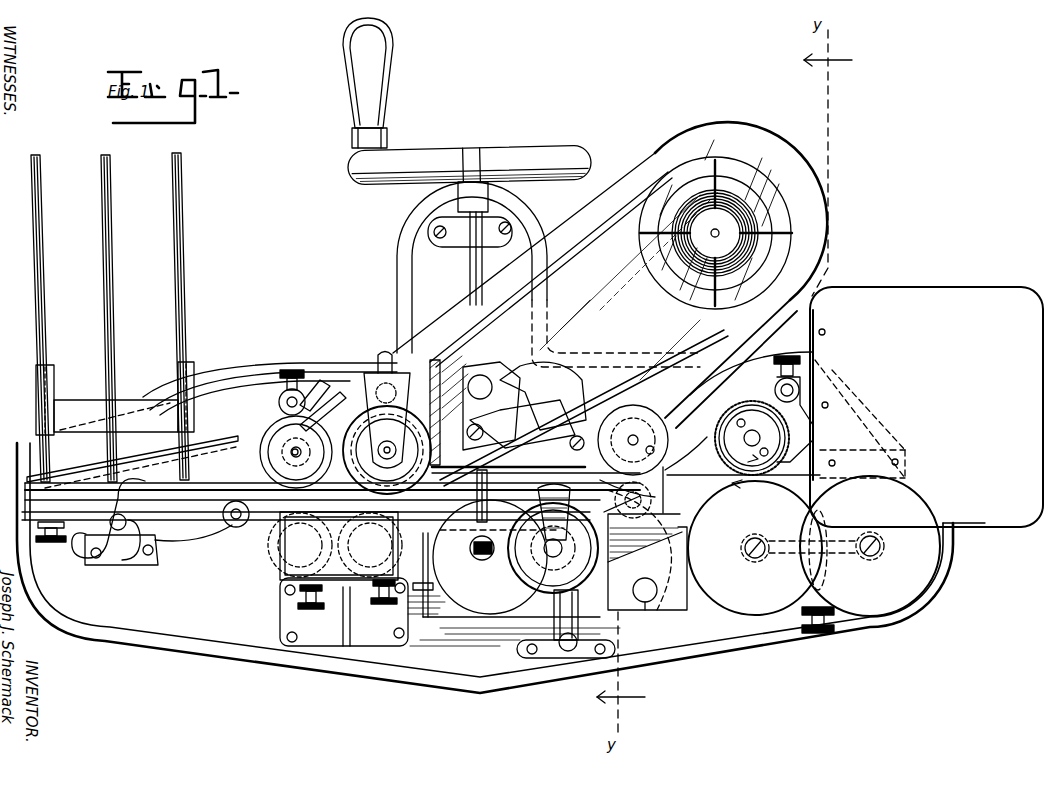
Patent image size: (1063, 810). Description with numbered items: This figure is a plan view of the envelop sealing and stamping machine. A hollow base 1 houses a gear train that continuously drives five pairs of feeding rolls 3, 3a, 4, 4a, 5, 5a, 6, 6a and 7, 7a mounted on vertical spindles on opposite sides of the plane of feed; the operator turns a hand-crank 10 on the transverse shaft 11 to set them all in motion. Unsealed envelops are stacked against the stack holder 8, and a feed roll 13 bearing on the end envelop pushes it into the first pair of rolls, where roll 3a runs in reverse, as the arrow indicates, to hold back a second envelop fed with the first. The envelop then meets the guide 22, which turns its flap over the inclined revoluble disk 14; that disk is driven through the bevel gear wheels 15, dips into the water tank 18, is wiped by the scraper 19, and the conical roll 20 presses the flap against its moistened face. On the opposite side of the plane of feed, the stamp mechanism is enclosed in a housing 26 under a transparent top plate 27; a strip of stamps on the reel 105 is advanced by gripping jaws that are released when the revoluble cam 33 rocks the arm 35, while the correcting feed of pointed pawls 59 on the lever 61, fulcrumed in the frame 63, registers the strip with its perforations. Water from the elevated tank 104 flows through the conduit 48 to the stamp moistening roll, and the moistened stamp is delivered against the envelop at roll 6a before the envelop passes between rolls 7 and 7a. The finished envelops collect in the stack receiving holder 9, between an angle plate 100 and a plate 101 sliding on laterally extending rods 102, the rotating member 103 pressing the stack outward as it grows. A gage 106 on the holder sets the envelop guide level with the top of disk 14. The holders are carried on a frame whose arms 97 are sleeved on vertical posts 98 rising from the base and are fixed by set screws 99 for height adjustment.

The base 1 is at (167, 650).
The feed roll 3 is at (772, 547).
The feed roll 3a is at (738, 420).
The feed roll 4 is at (647, 492).
The feed roll 4a is at (668, 440).
The feed roll 5 is at (496, 557).
The feed roll 5a is at (453, 496).
The feed roll 6 is at (342, 546).
The feed roll 6a is at (312, 400).
The feed roll 7 is at (262, 520).
The feed roll 7a is at (281, 452).
The stack holder 8 is at (926, 407).
The stack receiving holder 9 is at (48, 492).
The hand-crank 10 is at (387, 134).
The transverse shaft 11 is at (466, 272).
The feed roll 13 is at (925, 572).
The revoluble disk 14 is at (490, 622).
The bevel gear wheels 15 is at (470, 590).
The water tank 18 is at (473, 640).
The scraper 19 is at (656, 594).
The conical roll 20 is at (542, 516).
The guide 22 is at (643, 485).
The housing 26 is at (814, 242).
The transparent top plate 27 is at (608, 248).
The revoluble cam 33 is at (378, 375).
The arm 35 is at (405, 425).
The conduit 48 is at (467, 548).
The pointed pawls 59 is at (547, 418).
The lever 61 is at (582, 402).
The frame 63 is at (543, 396).
The arms 97 is at (775, 392).
The vertical posts 98 is at (802, 376).
The set screws 99 is at (786, 356).
The angle plate 100 is at (228, 508).
The plate 101 is at (166, 445).
The laterally extending rods 102 is at (183, 277).
The rotating member 103 is at (158, 539).
The elevated tank 104 is at (648, 560).
The reel 105 is at (764, 204).
The gage 106 is at (233, 522).